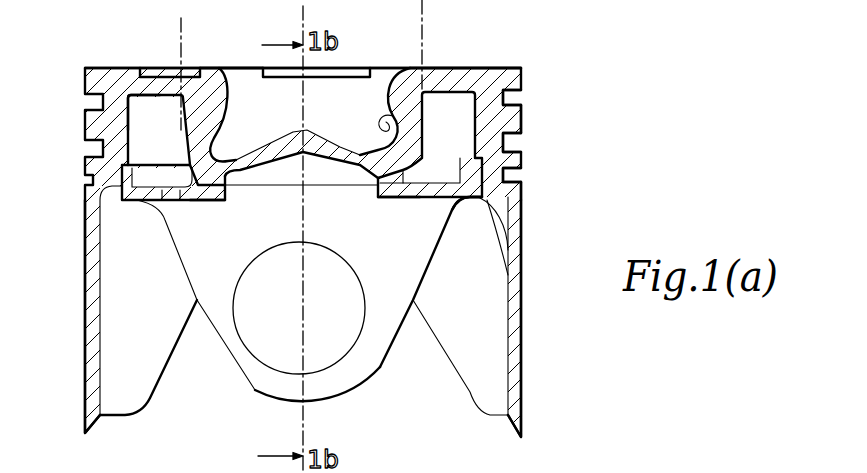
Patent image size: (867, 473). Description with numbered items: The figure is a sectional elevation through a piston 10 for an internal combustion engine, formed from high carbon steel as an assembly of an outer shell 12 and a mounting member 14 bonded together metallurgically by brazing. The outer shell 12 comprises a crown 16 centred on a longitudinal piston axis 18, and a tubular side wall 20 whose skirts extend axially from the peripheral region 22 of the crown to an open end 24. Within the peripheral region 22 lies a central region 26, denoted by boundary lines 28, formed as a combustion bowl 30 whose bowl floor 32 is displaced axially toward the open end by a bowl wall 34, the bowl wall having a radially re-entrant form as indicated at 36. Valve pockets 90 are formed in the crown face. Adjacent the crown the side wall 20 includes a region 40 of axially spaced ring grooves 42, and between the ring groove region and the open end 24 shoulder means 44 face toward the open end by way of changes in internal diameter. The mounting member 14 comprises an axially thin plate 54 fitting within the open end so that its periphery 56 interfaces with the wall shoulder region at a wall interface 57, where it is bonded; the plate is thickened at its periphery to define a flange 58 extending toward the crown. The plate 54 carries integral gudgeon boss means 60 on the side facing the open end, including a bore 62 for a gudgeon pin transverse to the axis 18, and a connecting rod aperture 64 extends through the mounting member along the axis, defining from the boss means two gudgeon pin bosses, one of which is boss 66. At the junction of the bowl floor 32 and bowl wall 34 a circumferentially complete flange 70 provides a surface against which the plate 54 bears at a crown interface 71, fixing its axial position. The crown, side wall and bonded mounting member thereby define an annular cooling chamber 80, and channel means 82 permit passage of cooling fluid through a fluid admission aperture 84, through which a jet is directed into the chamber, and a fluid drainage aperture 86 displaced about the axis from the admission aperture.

The piston 10 is at (528, 402).
The outer shell 12 is at (150, 412).
The mounting member 14 is at (256, 402).
The crown 16 is at (447, 52).
The longitudinal piston axis 18 is at (302, 35).
The tubular side wall 20 is at (520, 331).
The peripheral region 22 is at (475, 67).
The open end 24 is at (382, 454).
The central region 26 is at (240, 52).
The boundary lines 28 is at (181, 18).
The combustion bowl 30 is at (322, 118).
The bowl floor 32 is at (252, 140).
The bowl wall 34 is at (410, 130).
The radially re-entrant form 36 is at (423, 106).
The ring groove region 40 is at (524, 144).
The ring grooves 42 is at (512, 172).
The shoulder means 44 is at (522, 196).
The plate 54 is at (400, 200).
The periphery 56 is at (505, 265).
The wall interface 57 is at (508, 232).
The flange 58 is at (463, 210).
The gudgeon boss means 60 is at (383, 370).
The bore 62 is at (260, 352).
The aperture 64 is at (290, 198).
The gudgeon pin boss 66 is at (172, 300).
The flange 70 is at (187, 153).
The crown interface 71 is at (242, 186).
The annular cooling chamber 80 is at (142, 107).
The channel means 82 is at (172, 183).
The fluid admission aperture 84 is at (440, 183).
The fluid drainage aperture 86 is at (165, 225).
The valve pockets 90 is at (143, 70).